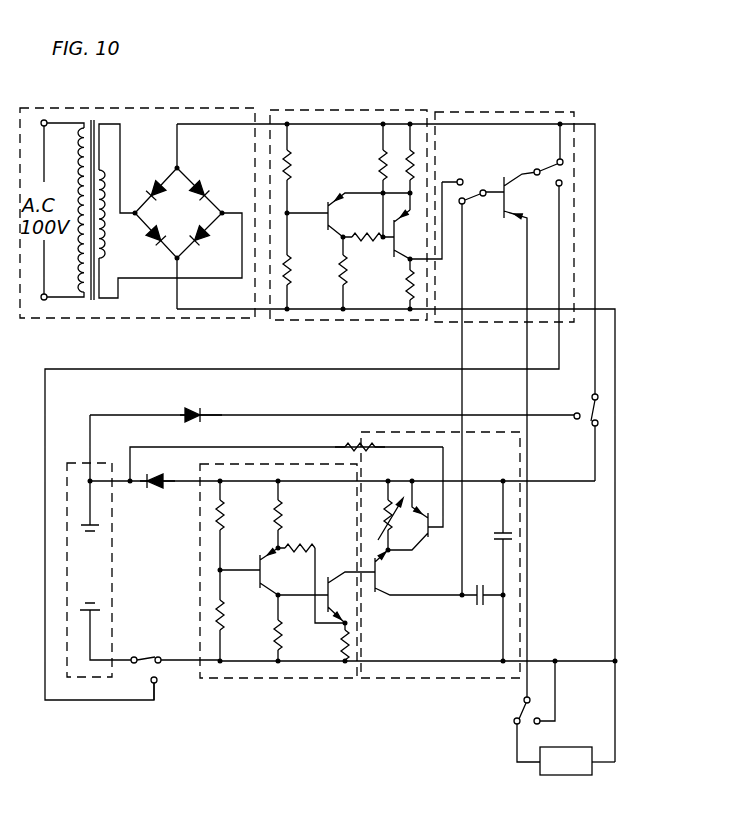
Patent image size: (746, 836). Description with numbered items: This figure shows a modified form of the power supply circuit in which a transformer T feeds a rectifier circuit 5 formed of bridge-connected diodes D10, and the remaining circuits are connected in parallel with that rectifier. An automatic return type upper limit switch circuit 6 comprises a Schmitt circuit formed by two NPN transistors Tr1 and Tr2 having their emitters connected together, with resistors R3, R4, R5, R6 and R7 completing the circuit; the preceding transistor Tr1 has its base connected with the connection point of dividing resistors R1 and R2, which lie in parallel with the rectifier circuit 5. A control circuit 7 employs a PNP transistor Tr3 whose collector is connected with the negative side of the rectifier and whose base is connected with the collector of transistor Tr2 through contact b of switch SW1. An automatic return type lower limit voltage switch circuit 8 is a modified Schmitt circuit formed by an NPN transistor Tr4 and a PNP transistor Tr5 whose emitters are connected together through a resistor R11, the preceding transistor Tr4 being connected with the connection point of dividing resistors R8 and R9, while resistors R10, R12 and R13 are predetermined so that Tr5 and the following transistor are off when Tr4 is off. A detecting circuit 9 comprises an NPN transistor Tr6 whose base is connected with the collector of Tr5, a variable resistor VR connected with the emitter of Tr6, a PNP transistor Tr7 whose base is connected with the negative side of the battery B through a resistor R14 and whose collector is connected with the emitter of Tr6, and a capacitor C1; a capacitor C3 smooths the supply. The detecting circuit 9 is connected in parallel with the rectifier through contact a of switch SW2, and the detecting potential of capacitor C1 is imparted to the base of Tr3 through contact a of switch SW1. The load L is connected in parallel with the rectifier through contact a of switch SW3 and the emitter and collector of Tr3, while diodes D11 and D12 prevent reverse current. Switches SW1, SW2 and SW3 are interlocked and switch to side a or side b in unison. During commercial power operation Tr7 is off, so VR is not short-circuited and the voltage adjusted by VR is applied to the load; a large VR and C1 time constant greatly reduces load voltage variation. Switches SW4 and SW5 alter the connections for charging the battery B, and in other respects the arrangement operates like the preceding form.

The rectifier circuit 5 is at (186, 106).
The automatic return type upper limit switch circuit 6 is at (362, 108).
The control circuit 7 is at (497, 110).
The automatic return type lower limit voltage switch circuit 8 is at (263, 682).
The detecting circuit 9 is at (406, 682).
The transformer T is at (89, 110).
The rectifier diodes D10 is at (181, 191).
The dividing resistor R1 is at (302, 168).
The dividing resistor R2 is at (302, 261).
The resistor R3 is at (357, 273).
The resistor R4 is at (368, 224).
The resistor R5 is at (378, 165).
The resistor R6 is at (417, 170).
The resistor R7 is at (406, 288).
The preceding transistor Tr1 is at (351, 186).
The transistor Tr2 is at (405, 239).
The control transistor Tr3 is at (510, 209).
The switch SW1 is at (474, 191).
The switch SW2 is at (558, 171).
The switch SW3 is at (524, 701).
The switch SW4 is at (143, 665).
The switch SW5 is at (600, 408).
The reverse current preventing diode D12 is at (203, 403).
The reverse current preventing diode D11 is at (164, 470).
The resistor R14 is at (364, 443).
The battery B is at (92, 569).
The dividing resistor R8 is at (235, 525).
The dividing resistor R9 is at (235, 615).
The resistor R10 is at (298, 514).
The resistor R11 is at (311, 574).
The resistor R12 is at (298, 628).
The resistor R13 is at (356, 642).
The preceding transistor Tr4 is at (258, 566).
The transistor Tr5 is at (348, 605).
The transistor Tr6 is at (381, 574).
The transistor Tr7 is at (431, 536).
The variable resistor VR is at (391, 500).
The smoothing capacitor C3 is at (494, 538).
The capacitor C1 is at (482, 606).
The load L is at (580, 756).